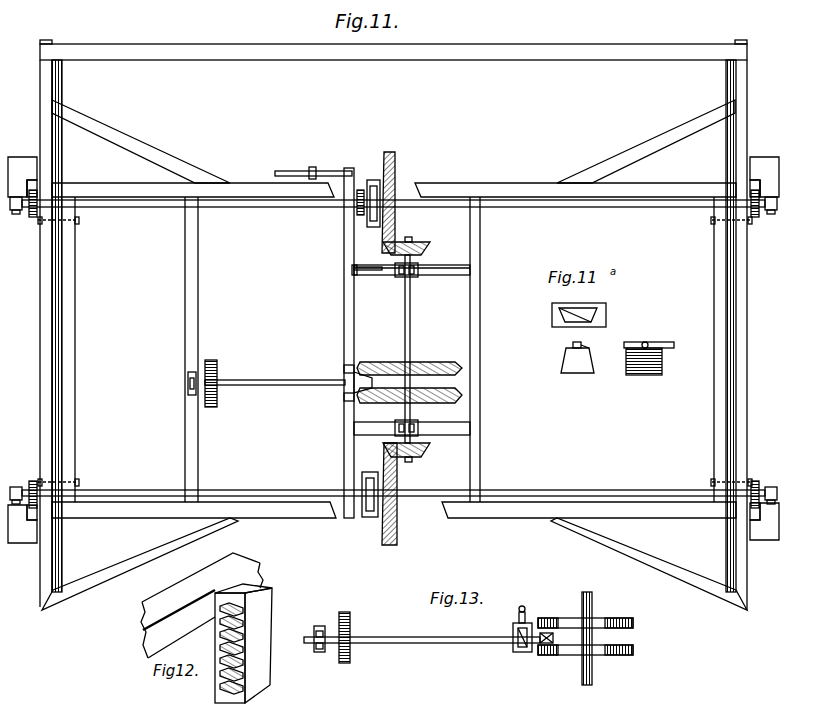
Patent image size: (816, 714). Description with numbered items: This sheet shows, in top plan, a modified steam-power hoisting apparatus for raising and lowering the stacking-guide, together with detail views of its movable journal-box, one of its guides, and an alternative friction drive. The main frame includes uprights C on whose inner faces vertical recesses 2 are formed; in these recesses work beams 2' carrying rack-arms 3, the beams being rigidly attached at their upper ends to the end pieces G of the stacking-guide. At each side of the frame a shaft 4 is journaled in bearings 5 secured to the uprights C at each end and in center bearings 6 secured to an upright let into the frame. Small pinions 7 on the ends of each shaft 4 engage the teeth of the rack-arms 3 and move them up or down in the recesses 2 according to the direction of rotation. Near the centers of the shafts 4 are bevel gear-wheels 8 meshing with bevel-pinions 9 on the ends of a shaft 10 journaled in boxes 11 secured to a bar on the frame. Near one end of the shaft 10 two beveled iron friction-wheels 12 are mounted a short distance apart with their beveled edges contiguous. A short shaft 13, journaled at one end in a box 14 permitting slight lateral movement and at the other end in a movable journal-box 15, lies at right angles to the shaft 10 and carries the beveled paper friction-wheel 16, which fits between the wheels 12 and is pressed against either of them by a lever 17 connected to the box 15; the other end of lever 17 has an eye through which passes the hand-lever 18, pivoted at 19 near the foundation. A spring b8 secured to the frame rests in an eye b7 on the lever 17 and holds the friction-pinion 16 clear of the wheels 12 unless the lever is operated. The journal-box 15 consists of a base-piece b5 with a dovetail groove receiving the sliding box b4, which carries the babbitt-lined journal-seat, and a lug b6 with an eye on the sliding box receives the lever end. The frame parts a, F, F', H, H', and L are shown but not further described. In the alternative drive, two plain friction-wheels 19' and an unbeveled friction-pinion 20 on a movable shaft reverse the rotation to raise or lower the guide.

In FIG. 11, the vertical recess 2 is at (394, 354).
In FIG. 12, the vertical recess 2 is at (243, 643).
In FIG. 11, the beam 2' is at (398, 349).
In FIG. 12, the rack-arm 3 is at (234, 648).
In FIG. 11, the shaft 4 is at (283, 204).
In FIG. 11, the bearing 5 is at (16, 215).
In FIG. 11, the bearing 6 is at (367, 225).
In FIG. 11, the pinion 7 is at (31, 218).
In FIG. 11, the bevel gear-wheel 8 is at (391, 150).
In FIG. 11, the bevel-pinion 9 is at (418, 245).
In FIG. 11, the shaft 10 is at (412, 326).
In FIG. 11, the box 11 is at (398, 278).
In FIG. 11, the beveled friction-wheel 12 is at (435, 363).
In FIG. 11, the short shaft 13 is at (286, 386).
In FIG. 13, the short shaft 13 is at (422, 637).
In FIG. 11, the box 14 is at (187, 390).
In FIG. 11, the movable journal-box 15 is at (344, 374).
In FIG. 11A, the movable journal-box 15 is at (590, 360).
In FIG. 13, the movable journal-box 15 is at (514, 650).
In FIG. 11, the beveled friction-wheel 16 is at (346, 400).
In FIG. 11, the lever 17 is at (344, 330).
In FIG. 11, the hand-lever 18 is at (289, 171).
In FIG. 11, the pivot 19 is at (322, 163).
In FIG. 13, the friction-wheel 19' is at (585, 638).
In FIG. 13, the friction-pinion 20 is at (555, 639).
In FIG. 11, the plate a is at (80, 220).
In FIG. 12, the plate a is at (202, 605).
In FIG. 11A, the sliding box b4 is at (561, 368).
In FIG. 11A, the base-piece b5 is at (552, 316).
In FIG. 11A, the lug b6 is at (664, 342).
In FIG. 13, the lug b6 is at (516, 606).
In FIG. 11, the eye b7 is at (344, 268).
In FIG. 11, the spring b8 is at (368, 258).
In FIG. 11, the upright C is at (393, 352).
In FIG. 11, the cross bar F is at (575, 207).
In FIG. 11, the lower cross bar F' is at (589, 525).
In FIG. 11, the end piece G is at (741, 349).
In FIG. 11, the frame plate H is at (393, 349).
In FIG. 11, the top rail H' is at (393, 325).
In FIG. 11, the diagonal brace L is at (122, 127).